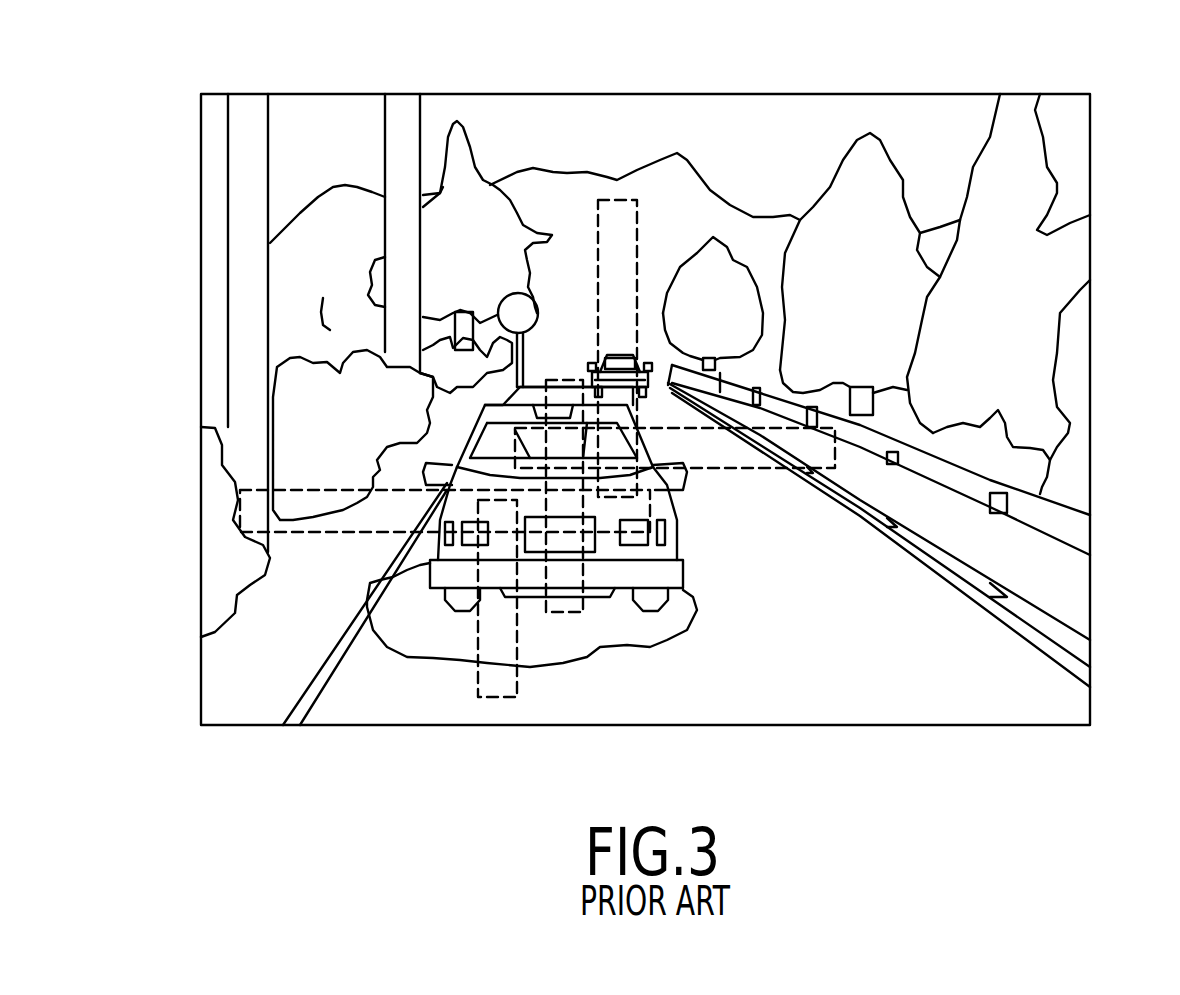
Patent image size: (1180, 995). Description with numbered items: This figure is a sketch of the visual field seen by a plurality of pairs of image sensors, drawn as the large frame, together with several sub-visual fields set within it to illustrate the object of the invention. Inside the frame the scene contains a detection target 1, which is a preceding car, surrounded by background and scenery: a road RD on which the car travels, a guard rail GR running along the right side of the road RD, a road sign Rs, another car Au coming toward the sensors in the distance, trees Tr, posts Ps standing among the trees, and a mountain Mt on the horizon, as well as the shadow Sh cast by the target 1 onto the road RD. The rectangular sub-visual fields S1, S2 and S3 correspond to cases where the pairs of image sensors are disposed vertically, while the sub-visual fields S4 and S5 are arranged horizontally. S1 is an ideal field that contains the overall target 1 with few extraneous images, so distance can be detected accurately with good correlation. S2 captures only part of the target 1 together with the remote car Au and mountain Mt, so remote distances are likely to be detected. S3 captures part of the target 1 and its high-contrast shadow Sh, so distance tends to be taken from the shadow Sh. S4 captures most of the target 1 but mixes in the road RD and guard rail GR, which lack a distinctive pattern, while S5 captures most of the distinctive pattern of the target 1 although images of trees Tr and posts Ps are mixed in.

The detection target 1 is at (585, 499).
The posts Ps is at (276, 295).
The trees Tr is at (734, 266).
The road sign Rs is at (499, 320).
The another car Au is at (605, 337).
The mountain Mt is at (645, 159).
The sub-visual field S1 is at (581, 548).
The sub-visual field S2 is at (617, 298).
The sub-visual field S3 is at (460, 608).
The sub-visual field S4 is at (675, 485).
The sub-visual field S5 is at (445, 554).
The shadow Sh is at (552, 624).
The guard rail GR is at (879, 535).
The road RD is at (592, 645).